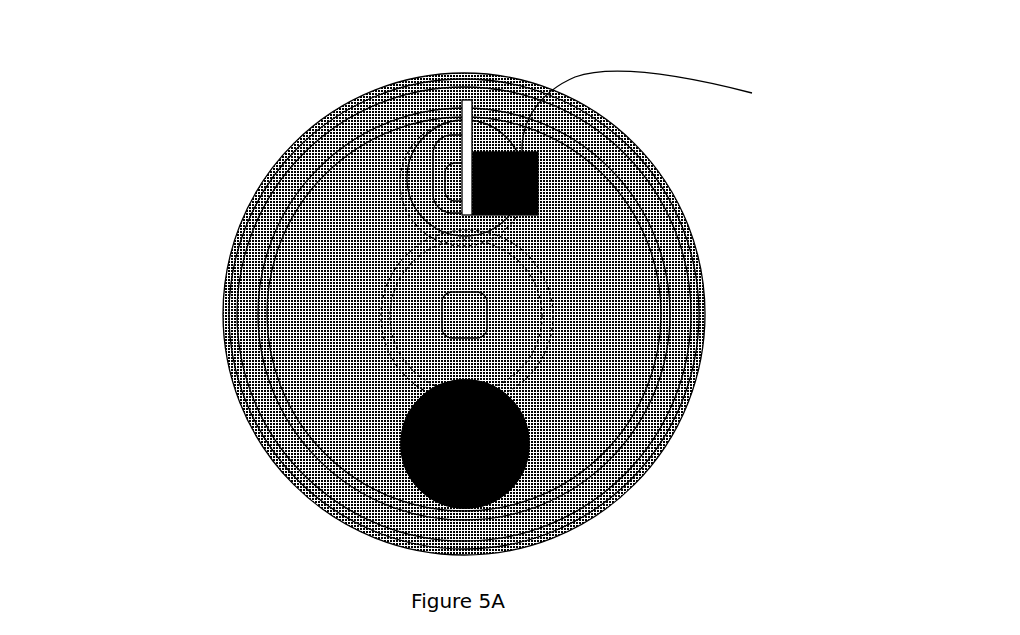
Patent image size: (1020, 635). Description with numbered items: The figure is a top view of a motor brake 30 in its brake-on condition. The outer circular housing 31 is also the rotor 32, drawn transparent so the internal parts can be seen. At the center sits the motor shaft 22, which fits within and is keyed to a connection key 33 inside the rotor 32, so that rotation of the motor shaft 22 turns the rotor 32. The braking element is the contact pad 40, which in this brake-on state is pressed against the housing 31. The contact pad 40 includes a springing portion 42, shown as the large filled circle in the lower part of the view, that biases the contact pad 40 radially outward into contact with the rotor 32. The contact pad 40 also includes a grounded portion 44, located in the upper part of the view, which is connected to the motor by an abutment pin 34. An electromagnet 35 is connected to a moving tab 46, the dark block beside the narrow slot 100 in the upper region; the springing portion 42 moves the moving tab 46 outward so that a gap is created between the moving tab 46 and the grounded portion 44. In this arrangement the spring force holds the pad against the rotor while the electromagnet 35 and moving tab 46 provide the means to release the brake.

The slot 100 is at (467, 153).
The motor brake 30 is at (140, 105).
The grounded portion 44 is at (397, 162).
The electromagnet 35 is at (657, 111).
The abutment pin 34 is at (412, 218).
The moving tab 46 is at (508, 218).
The motor shaft 22 is at (467, 318).
The contact pad 40 is at (660, 318).
The connection key 33 is at (513, 325).
The springing portion 42 is at (562, 464).
The housing 31 is at (552, 531).
The rotor 32 is at (464, 314).